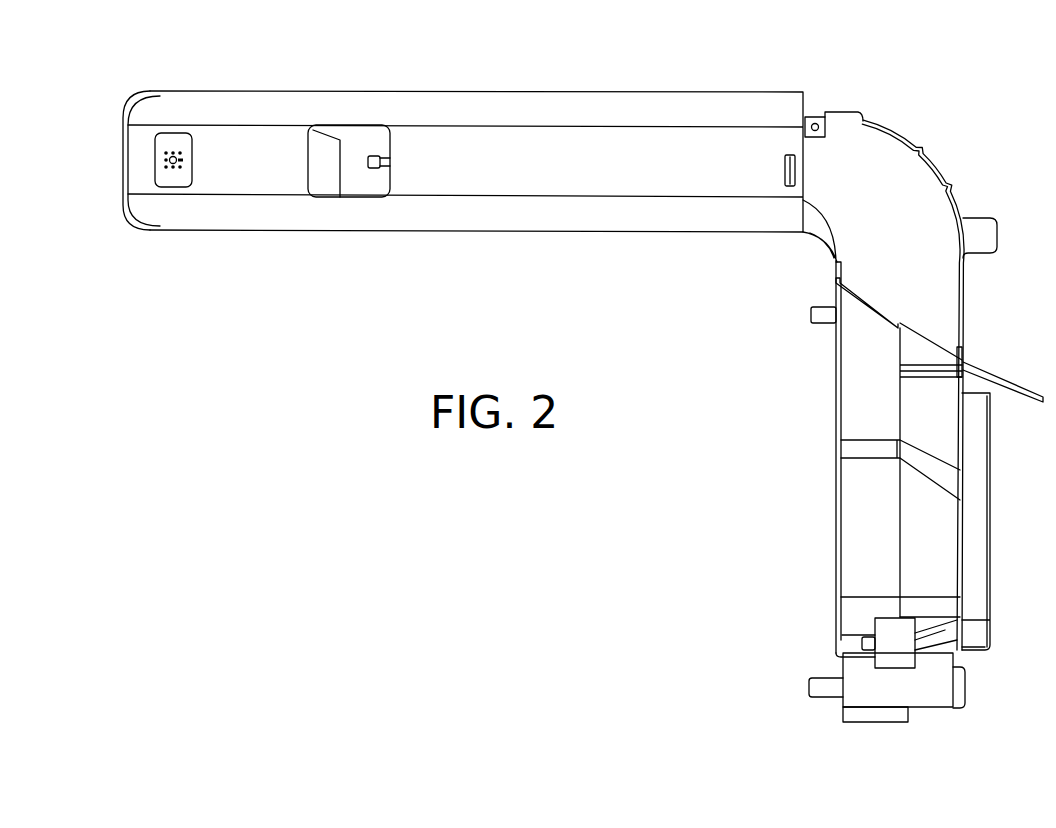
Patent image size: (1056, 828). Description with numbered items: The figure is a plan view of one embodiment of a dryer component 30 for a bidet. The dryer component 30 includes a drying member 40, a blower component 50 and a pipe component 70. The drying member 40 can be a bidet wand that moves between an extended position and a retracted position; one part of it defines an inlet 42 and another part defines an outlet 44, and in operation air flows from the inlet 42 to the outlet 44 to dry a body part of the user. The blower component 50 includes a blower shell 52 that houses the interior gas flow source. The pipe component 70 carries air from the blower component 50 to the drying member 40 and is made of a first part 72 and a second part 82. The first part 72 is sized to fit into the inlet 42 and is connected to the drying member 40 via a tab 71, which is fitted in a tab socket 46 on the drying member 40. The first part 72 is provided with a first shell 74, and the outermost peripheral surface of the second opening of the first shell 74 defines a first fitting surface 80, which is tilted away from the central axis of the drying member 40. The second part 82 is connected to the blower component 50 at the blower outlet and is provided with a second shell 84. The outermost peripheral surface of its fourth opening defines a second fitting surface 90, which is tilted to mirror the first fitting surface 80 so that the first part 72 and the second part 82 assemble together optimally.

The dryer component 30 is at (813, 83).
The drying member 40 is at (220, 90).
The inlet 42 is at (815, 240).
The outlet 44 is at (348, 150).
The tab socket 46 is at (788, 168).
The blower component 50 is at (992, 512).
The blower shell 52 is at (972, 628).
The pipe component 70 is at (966, 343).
The tab 71 is at (800, 168).
The first part 72 is at (907, 143).
The first shell 74 is at (940, 212).
The first fitting surface 80 is at (898, 325).
The second part 82 is at (837, 418).
The second shell 84 is at (848, 565).
The second fitting surface 90 is at (927, 343).